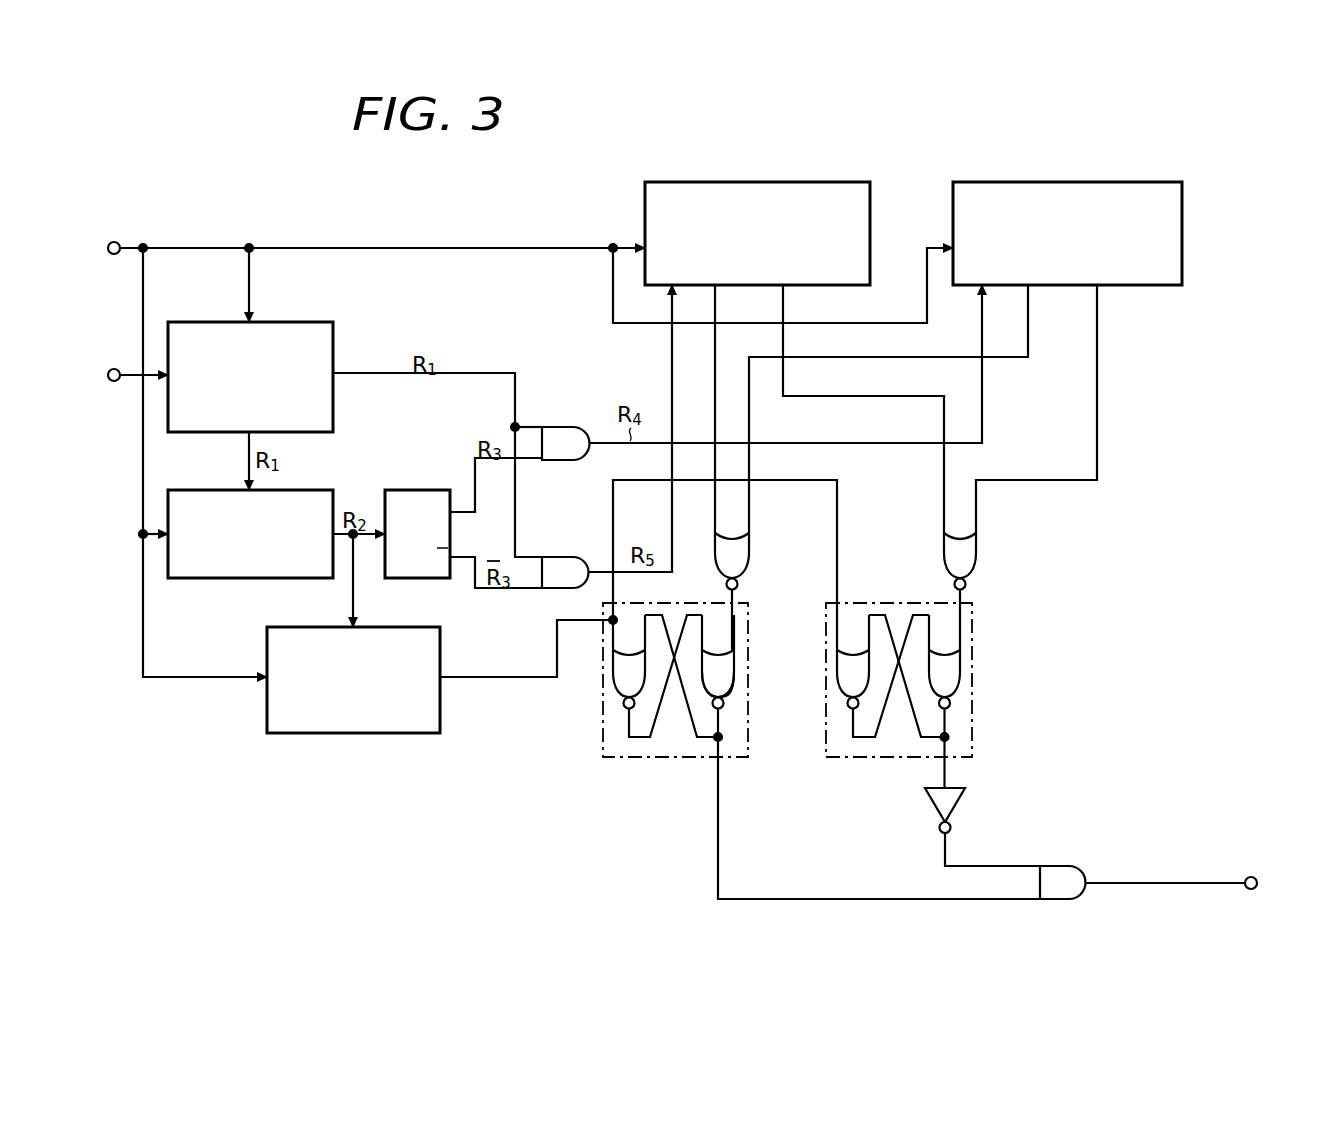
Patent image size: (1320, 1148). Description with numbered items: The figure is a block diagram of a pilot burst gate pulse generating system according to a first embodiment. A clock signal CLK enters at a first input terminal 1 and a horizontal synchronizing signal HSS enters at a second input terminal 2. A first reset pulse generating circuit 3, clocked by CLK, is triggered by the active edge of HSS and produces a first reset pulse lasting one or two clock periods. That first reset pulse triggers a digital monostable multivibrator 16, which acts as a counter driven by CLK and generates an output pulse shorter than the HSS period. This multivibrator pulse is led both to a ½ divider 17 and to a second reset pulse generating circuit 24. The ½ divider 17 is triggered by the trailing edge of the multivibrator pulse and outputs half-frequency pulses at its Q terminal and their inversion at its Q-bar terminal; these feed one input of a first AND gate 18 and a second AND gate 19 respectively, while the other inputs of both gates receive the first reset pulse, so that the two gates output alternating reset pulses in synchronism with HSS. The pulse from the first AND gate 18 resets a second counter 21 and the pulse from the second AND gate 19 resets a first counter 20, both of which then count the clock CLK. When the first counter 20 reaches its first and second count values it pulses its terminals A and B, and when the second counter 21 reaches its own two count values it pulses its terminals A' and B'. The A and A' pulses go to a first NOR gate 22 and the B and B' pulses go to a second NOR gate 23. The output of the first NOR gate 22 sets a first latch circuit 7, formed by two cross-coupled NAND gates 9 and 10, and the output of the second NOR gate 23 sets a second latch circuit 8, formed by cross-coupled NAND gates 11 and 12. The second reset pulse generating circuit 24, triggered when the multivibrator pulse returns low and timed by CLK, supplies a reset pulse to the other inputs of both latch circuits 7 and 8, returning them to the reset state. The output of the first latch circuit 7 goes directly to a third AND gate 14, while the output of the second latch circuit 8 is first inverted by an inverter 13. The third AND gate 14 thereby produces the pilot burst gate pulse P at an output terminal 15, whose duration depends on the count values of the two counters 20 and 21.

The first input terminal 1 is at (116, 242).
The second input terminal 2 is at (116, 369).
The first reset pulse generating circuit 3 is at (333, 330).
The first latch circuit 7 is at (677, 708).
The second latch circuit 8 is at (906, 675).
The NAND gate 9 is at (613, 677).
The NAND gate 10 is at (735, 675).
The NAND gate 11 is at (837, 658).
The NAND gate 12 is at (962, 686).
The inverter 13 is at (960, 805).
The third AND gate 14 is at (1067, 866).
The output terminal 15 is at (1253, 877).
The digital monostable multivibrator 16 is at (298, 490).
The ½ divider 17 is at (429, 490).
The first AND gate 18 is at (560, 427).
The second AND gate 19 is at (560, 557).
The first counter 20 is at (800, 182).
The second counter 21 is at (1043, 182).
The first NOR gate 22 is at (750, 548).
The second NOR gate 23 is at (978, 548).
The second reset pulse generating circuit 24 is at (424, 735).